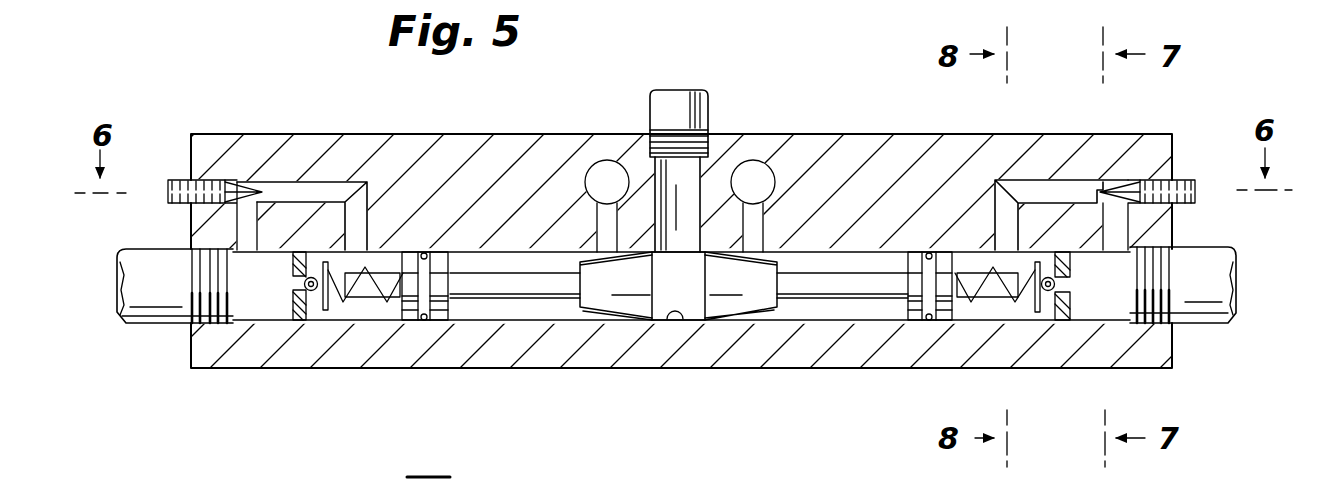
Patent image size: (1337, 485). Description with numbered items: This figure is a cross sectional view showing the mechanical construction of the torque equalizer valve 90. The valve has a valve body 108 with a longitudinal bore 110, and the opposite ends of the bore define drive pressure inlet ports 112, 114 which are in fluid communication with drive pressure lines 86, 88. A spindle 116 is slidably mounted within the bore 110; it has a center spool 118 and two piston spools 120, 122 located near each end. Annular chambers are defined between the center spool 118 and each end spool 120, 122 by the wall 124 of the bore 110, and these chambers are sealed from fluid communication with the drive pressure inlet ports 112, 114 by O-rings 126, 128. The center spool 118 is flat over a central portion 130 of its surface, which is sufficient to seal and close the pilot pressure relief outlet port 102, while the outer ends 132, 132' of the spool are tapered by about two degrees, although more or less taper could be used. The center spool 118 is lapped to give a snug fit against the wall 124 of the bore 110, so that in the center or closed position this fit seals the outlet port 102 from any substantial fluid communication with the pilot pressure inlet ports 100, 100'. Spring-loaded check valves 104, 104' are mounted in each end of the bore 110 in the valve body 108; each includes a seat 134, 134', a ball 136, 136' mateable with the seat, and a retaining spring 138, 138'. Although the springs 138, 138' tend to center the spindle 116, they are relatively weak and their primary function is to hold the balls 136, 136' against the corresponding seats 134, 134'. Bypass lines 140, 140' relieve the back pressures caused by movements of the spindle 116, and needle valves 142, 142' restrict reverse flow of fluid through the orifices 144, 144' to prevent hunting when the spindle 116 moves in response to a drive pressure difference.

The drive pressure line 86 is at (1217, 247).
The drive pressure line 88 is at (162, 248).
The torque equalizer valve 90 is at (505, 120).
The pilot pressure inlet port 100 is at (755, 156).
The pilot pressure inlet port 100' is at (598, 157).
The pilot pressure relief outlet port 102 is at (690, 90).
The spring-loaded check valve 104 is at (1097, 263).
The spring-loaded check valve 104' is at (259, 267).
The valve body 108 is at (818, 138).
The longitudinal bore 110 is at (681, 286).
The drive pressure inlet port 112 is at (1232, 300).
The drive pressure inlet port 114 is at (118, 290).
The spindle 116 is at (522, 290).
The center spool 118 is at (784, 306).
The piston spool 120 is at (842, 298).
The piston spool 122 is at (462, 308).
The wall of bore 124 is at (682, 320).
The O-ring 126 is at (932, 320).
The O-ring 128 is at (430, 320).
The central portion 130 is at (692, 291).
The outer end of spool 132 is at (748, 332).
The outer end of spool 132' is at (595, 333).
The seat 134 is at (1086, 286).
The seat 134' is at (273, 286).
The ball 136 is at (1072, 339).
The ball 136' is at (302, 344).
The retaining spring 138 is at (997, 331).
The retaining spring 138' is at (363, 336).
The bypass line 140 is at (1061, 167).
The bypass line 140' is at (302, 169).
The needle valve 142 is at (1164, 151).
The needle valve 142' is at (195, 165).
The orifice 144 is at (1106, 167).
The orifice 144' is at (264, 166).